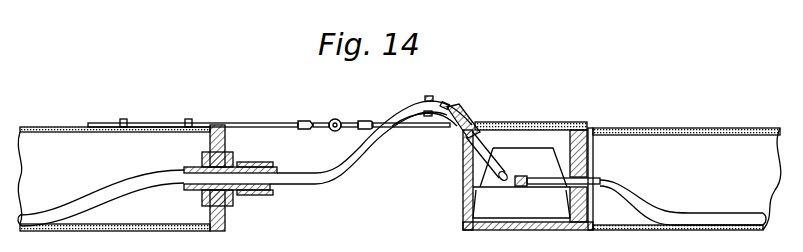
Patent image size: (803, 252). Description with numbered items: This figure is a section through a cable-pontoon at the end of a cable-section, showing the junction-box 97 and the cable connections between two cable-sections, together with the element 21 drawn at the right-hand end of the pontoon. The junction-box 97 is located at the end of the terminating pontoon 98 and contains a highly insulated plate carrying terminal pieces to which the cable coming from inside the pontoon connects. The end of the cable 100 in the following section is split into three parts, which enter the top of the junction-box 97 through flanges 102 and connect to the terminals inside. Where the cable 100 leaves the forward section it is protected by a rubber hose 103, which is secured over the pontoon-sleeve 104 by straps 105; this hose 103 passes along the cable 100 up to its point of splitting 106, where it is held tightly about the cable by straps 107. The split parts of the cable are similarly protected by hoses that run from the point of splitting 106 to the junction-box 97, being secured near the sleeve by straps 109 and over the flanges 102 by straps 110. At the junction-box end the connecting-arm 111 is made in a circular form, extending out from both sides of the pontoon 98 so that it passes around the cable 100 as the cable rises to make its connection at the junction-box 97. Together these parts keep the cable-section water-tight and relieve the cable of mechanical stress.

The conduit 21 is at (688, 215).
The junction-box 97 is at (537, 148).
The terminating pontoon 98 is at (684, 179).
The cable 100 is at (168, 180).
The flanges 102 is at (470, 128).
The rubber hose 103 is at (310, 188).
The pontoon-sleeve 104 is at (226, 212).
The straps 105 is at (250, 162).
The point of splitting 106 is at (418, 98).
The straps 107 is at (450, 103).
The straps 109 is at (436, 121).
The straps 110 is at (459, 138).
The connecting-arm 111 is at (383, 121).